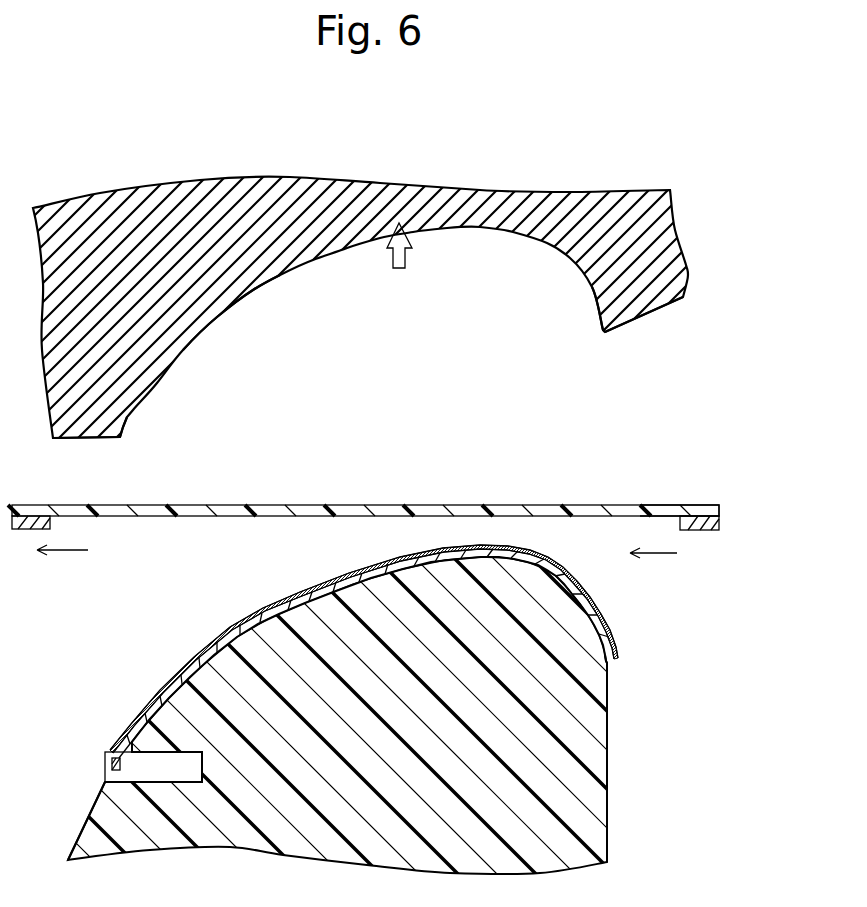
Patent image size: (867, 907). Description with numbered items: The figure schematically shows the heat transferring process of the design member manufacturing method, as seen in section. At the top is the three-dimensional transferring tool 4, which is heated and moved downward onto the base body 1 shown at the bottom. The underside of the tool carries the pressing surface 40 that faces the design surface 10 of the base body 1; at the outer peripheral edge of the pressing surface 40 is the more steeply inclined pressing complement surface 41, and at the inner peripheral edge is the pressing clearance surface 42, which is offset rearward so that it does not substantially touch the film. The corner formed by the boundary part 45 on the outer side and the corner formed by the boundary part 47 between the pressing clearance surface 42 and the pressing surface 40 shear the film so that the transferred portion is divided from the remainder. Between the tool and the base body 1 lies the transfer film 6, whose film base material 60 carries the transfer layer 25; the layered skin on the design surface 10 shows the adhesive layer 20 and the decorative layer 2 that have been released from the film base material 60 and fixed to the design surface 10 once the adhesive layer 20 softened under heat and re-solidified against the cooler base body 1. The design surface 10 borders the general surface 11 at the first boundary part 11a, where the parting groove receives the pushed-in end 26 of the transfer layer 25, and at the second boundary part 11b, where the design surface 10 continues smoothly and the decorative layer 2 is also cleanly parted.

The base body 1 is at (595, 802).
The decorative layer 2 is at (148, 693).
The three-dimensional transferring tool 4 is at (600, 191).
The transfer film 6 is at (700, 512).
The design surface 10 is at (233, 617).
The general surface 11 is at (80, 835).
The first boundary part 11a is at (128, 755).
The second boundary part 11b is at (613, 667).
The adhesive layer 20 is at (172, 670).
The transfer layer 25 is at (612, 618).
The end of the transfer layer 26 is at (108, 762).
The pressing surface 40 is at (204, 330).
The pressing complement surface 41 is at (121, 428).
The pressing clearance surface 42 is at (652, 318).
The boundary part 45 is at (124, 440).
The boundary part 47 is at (605, 340).
The film base material 60 is at (380, 507).